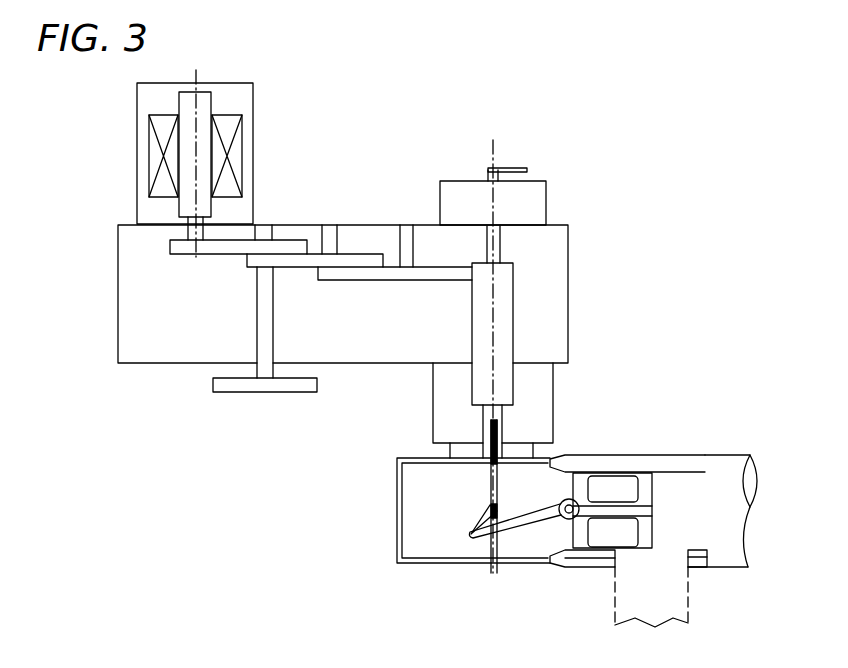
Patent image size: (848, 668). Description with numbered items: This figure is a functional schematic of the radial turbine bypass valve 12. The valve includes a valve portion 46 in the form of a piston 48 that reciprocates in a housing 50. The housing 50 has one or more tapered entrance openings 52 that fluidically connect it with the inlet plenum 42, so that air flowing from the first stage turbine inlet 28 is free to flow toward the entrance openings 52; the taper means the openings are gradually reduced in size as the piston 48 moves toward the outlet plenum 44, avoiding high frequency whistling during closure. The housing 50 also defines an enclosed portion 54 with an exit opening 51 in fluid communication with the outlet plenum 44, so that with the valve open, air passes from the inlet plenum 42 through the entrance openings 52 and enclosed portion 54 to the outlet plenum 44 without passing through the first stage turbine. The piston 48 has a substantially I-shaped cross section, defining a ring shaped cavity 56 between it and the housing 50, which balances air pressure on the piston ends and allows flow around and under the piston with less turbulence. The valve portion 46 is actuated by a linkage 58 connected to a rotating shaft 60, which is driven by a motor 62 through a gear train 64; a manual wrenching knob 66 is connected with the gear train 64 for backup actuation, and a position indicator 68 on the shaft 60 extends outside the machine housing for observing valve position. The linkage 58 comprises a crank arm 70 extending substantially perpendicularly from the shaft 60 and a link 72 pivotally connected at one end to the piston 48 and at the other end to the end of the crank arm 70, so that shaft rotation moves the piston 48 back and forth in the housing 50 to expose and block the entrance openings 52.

The radial turbine bypass valve 12 is at (593, 298).
The first stage turbine inlet 28 is at (642, 627).
The inlet plenum 42 is at (665, 600).
The outlet plenum 44 is at (767, 508).
The valve portion 46 is at (657, 450).
The piston 48 is at (582, 542).
The housing 50 is at (697, 462).
The exit opening 51 is at (747, 555).
The entrance openings 52 is at (670, 558).
The enclosed portion 54 is at (757, 475).
The ring shaped cavity 56 is at (605, 485).
The linkage 58 is at (514, 546).
The rotating shaft 60 is at (491, 482).
The motor 62 is at (243, 162).
The gear train 64 is at (358, 240).
The manual wrenching knob 66 is at (228, 393).
The position indicator 68 is at (512, 165).
The crank arm 70 is at (477, 526).
The link 72 is at (535, 520).